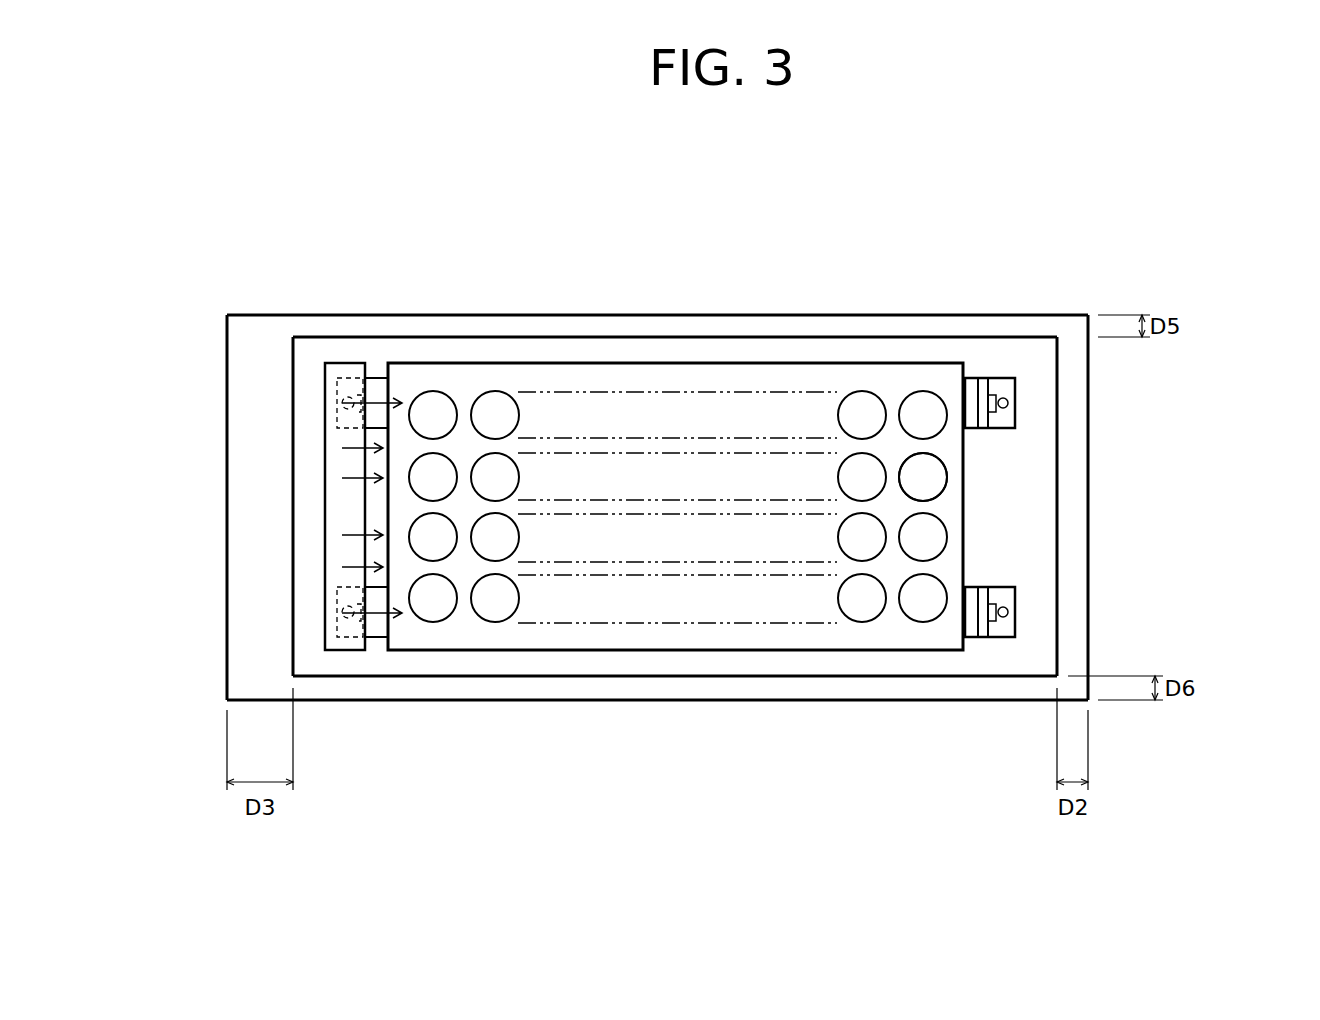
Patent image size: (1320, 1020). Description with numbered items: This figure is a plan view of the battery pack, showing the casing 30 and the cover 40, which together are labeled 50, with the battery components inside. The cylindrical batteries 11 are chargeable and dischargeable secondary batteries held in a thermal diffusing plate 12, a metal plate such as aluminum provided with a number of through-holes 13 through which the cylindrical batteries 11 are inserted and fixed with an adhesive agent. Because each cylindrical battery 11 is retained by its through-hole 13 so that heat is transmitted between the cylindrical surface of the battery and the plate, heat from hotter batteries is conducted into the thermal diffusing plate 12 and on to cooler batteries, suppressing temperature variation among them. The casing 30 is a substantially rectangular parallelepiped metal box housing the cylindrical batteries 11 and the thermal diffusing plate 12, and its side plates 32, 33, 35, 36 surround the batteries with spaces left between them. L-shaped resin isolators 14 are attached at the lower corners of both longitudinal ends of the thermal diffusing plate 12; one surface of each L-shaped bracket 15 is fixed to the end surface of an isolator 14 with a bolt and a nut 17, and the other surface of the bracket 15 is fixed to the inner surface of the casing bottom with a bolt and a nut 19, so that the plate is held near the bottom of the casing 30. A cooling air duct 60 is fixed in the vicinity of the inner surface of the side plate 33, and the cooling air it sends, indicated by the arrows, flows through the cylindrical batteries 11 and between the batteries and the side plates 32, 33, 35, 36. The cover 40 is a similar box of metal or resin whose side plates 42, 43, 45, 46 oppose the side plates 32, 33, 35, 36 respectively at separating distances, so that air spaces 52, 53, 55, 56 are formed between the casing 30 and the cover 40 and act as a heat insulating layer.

The cylindrical battery 11 is at (947, 477).
The thermal diffusing plate 12 is at (967, 448).
The through-hole 13 is at (923, 390).
The isolator 14 is at (973, 378).
The bracket 15 is at (986, 378).
The nut 17 is at (993, 378).
The nut 19 is at (1015, 392).
The casing 30 is at (1070, 517).
The side plate 32 is at (1057, 558).
The side plate 33 is at (293, 555).
The side plate 35 is at (738, 337).
The side plate 36 is at (716, 676).
The cover 40 is at (1105, 470).
The side plate 42 is at (1088, 598).
The side plate 43 is at (227, 420).
The side plate 45 is at (673, 315).
The side plate 46 is at (823, 700).
The housing 50 is at (1216, 430).
The air space 52 is at (1077, 640).
The air space 53 is at (253, 627).
The air space 55 is at (622, 322).
The air space 56 is at (785, 693).
The cooling air duct 60 is at (345, 363).